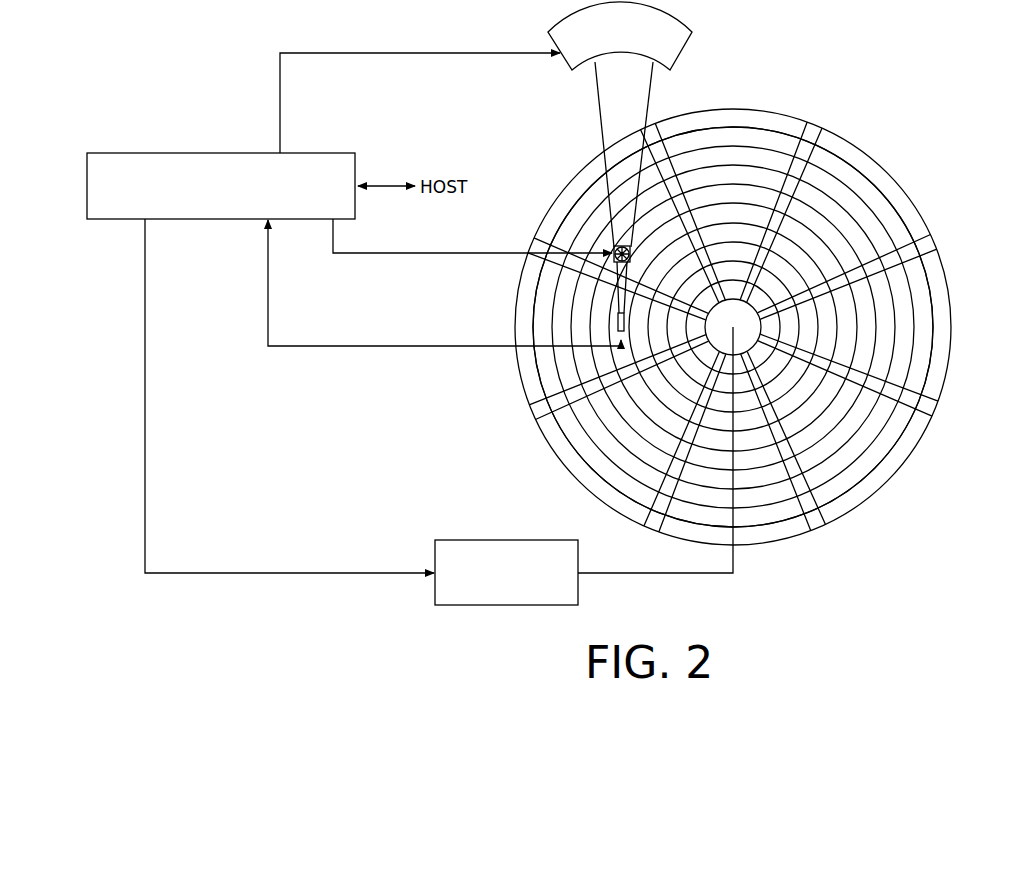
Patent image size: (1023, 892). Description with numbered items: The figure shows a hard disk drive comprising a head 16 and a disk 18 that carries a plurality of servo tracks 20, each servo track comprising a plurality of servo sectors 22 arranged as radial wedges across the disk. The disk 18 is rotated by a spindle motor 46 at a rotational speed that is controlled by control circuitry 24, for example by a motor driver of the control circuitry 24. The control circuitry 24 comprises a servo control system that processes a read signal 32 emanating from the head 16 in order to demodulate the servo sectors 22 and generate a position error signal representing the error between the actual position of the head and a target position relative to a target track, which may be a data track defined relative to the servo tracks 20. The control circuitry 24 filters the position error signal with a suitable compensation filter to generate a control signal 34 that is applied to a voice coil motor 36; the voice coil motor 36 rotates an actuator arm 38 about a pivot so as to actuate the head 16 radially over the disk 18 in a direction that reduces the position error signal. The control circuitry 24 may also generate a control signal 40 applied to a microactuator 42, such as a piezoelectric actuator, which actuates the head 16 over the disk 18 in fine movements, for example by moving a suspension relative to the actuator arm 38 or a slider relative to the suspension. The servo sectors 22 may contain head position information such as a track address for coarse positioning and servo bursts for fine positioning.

The head 16 is at (612, 320).
The disk 18 is at (884, 158).
The servo tracks 20 is at (733, 140).
The servo sectors 22 is at (735, 334).
The control circuitry 24 is at (321, 153).
The read signal 32 is at (436, 346).
The control signal 34 is at (280, 110).
The voice coil motor 36 is at (564, 68).
The actuator arm 38 is at (604, 133).
The control signal 40 is at (436, 253).
The microactuator 42 is at (633, 254).
The spindle motor 46 is at (492, 540).